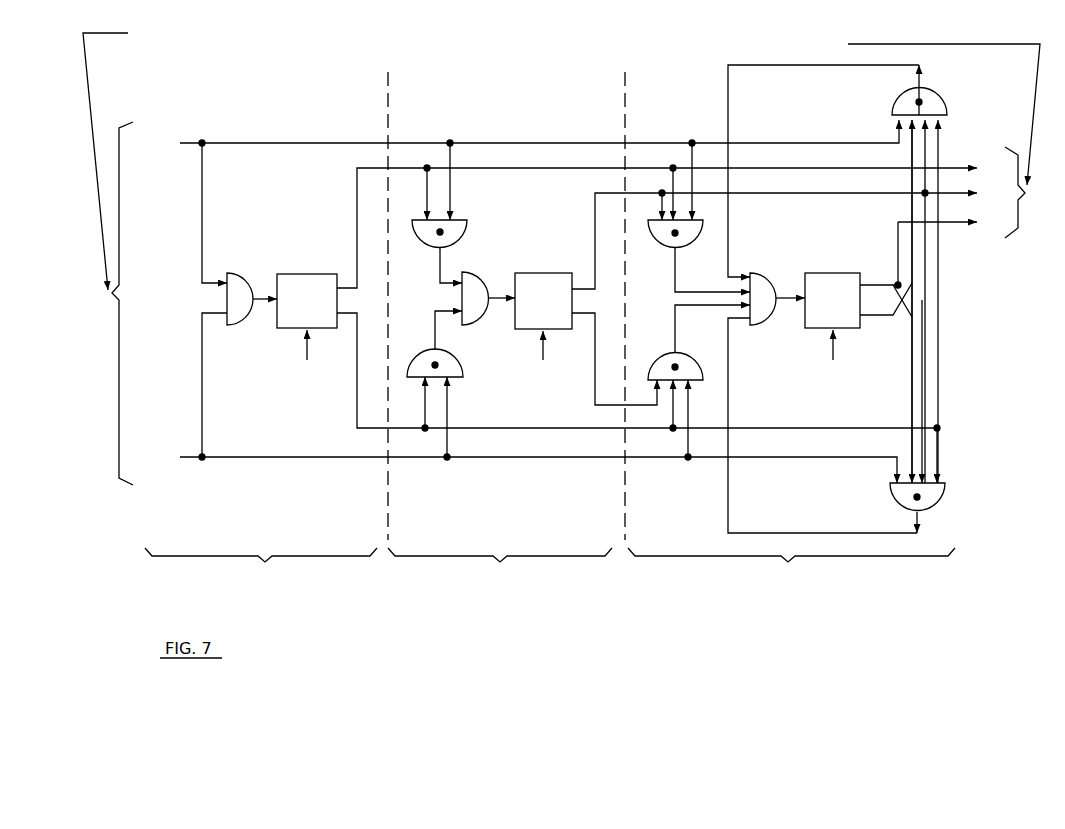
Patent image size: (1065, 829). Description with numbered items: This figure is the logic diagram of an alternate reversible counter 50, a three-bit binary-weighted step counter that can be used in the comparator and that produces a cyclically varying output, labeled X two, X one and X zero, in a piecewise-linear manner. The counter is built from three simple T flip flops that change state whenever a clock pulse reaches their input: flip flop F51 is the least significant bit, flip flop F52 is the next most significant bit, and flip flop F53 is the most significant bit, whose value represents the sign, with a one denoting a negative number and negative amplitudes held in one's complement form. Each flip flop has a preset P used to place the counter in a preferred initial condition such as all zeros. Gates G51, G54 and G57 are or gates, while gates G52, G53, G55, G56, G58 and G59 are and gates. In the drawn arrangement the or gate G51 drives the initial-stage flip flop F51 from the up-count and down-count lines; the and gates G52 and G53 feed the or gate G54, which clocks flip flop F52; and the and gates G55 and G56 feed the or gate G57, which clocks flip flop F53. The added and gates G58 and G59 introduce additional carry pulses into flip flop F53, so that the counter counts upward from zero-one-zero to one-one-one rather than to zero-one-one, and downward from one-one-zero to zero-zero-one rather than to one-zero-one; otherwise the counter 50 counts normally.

The reversible counter 50 is at (545, 33).
The or gate G51 is at (251, 291).
The flip flop F51 is at (307, 317).
The and gate G52 is at (433, 213).
The and gate G53 is at (431, 384).
The or gate G54 is at (488, 290).
The flip flop F52 is at (543, 317).
The and gate G55 is at (693, 217).
The and gate G56 is at (692, 381).
The or gate G57 is at (777, 290).
The flip flop F53 is at (858, 300).
The and gate G58 is at (928, 274).
The and gate G59 is at (927, 326).